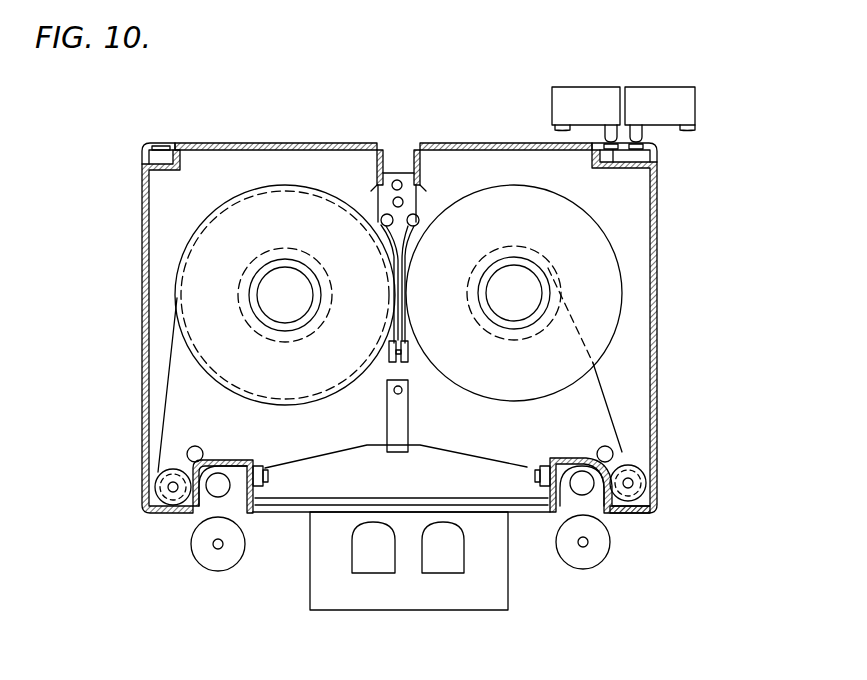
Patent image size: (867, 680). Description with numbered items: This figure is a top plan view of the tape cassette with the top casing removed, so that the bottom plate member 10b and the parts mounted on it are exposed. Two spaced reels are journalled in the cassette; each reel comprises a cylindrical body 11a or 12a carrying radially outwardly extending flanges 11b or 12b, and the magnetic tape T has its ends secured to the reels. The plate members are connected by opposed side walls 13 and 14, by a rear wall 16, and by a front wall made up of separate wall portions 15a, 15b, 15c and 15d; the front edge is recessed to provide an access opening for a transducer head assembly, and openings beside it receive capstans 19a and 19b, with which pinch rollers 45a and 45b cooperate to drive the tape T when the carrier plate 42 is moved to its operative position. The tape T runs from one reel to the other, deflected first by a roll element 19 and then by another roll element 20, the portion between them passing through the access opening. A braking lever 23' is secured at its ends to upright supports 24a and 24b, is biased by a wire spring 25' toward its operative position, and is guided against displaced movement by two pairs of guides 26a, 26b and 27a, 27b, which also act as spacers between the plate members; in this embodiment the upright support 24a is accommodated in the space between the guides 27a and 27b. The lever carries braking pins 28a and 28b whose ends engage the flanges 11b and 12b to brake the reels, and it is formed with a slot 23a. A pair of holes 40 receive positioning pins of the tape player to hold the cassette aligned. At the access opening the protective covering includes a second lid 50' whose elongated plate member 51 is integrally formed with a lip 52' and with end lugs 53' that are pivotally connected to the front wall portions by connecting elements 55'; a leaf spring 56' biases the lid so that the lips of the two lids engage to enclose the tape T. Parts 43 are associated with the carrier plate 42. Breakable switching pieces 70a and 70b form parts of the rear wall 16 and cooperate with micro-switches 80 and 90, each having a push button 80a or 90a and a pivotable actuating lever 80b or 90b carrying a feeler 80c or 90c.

The bottom plate member 10b is at (632, 350).
The cylindrical body 11a is at (548, 268).
The flanges 11b is at (603, 228).
The cylindrical body 12a is at (275, 250).
The flanges 12b is at (190, 236).
The side wall 13 is at (145, 278).
The side wall 14 is at (655, 303).
The front wall portion 15a is at (632, 512).
The front wall portion 15b is at (544, 514).
The front wall portion 15c is at (257, 514).
The front wall portion 15d is at (168, 514).
The rear wall 16 is at (218, 143).
The roll element 19 is at (156, 484).
The capstan 19a is at (640, 470).
The capstan 19b is at (212, 497).
The roll element 20 is at (657, 497).
The tape guide slot 23' is at (423, 284).
The slot 23a is at (404, 202).
The upright support 24a is at (406, 327).
The upright support 24b is at (398, 173).
The guide wall 25' is at (356, 141).
The guide 26a is at (377, 165).
The guide 26b is at (420, 165).
The guide 27a is at (389, 345).
The guide 27b is at (408, 341).
The braking pin 28a is at (420, 225).
The braking pin 28b is at (381, 222).
The holes 40 is at (188, 452).
The carrier plate 42 is at (418, 610).
The head openings 43 is at (368, 573).
The pinch roller 45a is at (605, 555).
The pinch roller 45b is at (218, 572).
The second lid 50' is at (409, 561).
The elongated plate member 51 is at (367, 475).
The lip 52' is at (401, 588).
The lug 53' is at (421, 461).
The connecting elements 55' is at (405, 448).
The leaf spring 56' is at (416, 435).
The breakable piece 70a is at (658, 149).
The breakable piece 70b is at (614, 162).
The micro-switch 80 is at (703, 92).
The push button 80a is at (680, 128).
The pivotable actuating lever 80b is at (695, 98).
The feeler 80c is at (653, 128).
The micro-switch 90 is at (605, 85).
The push button 90a is at (568, 128).
The pivotable actuating lever 90b is at (597, 128).
The feeler 90c is at (613, 135).
The magnetic tape T is at (517, 513).